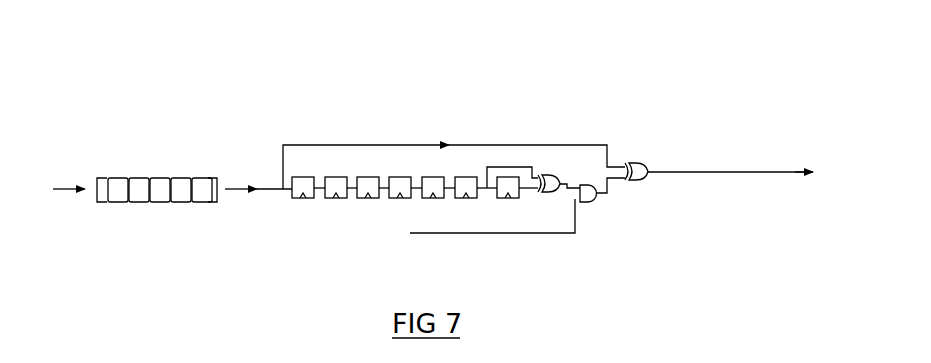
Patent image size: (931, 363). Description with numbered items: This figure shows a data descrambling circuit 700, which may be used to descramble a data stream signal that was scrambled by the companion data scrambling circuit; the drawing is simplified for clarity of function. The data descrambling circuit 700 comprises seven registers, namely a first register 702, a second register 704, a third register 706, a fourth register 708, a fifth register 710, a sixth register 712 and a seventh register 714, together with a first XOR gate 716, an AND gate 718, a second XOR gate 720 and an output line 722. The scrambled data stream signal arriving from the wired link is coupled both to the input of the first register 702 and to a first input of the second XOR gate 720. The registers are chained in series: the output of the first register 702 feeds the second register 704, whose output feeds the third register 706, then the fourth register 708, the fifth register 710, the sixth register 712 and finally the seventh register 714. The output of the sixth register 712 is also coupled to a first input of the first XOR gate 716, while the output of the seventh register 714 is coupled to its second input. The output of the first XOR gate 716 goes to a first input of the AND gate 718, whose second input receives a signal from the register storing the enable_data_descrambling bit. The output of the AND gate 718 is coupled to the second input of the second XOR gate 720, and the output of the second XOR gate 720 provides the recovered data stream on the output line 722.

The data descrambling circuit 700 is at (198, 70).
The first register 702 is at (302, 200).
The second register 704 is at (341, 200).
The third register 706 is at (373, 200).
The fourth register 708 is at (405, 200).
The fifth register 710 is at (438, 200).
The sixth register 712 is at (471, 200).
The seventh register 714 is at (513, 200).
The first XOR gate 716 is at (548, 176).
The AND gate 718 is at (597, 203).
The second XOR gate 720 is at (638, 163).
The output line 722 is at (800, 172).